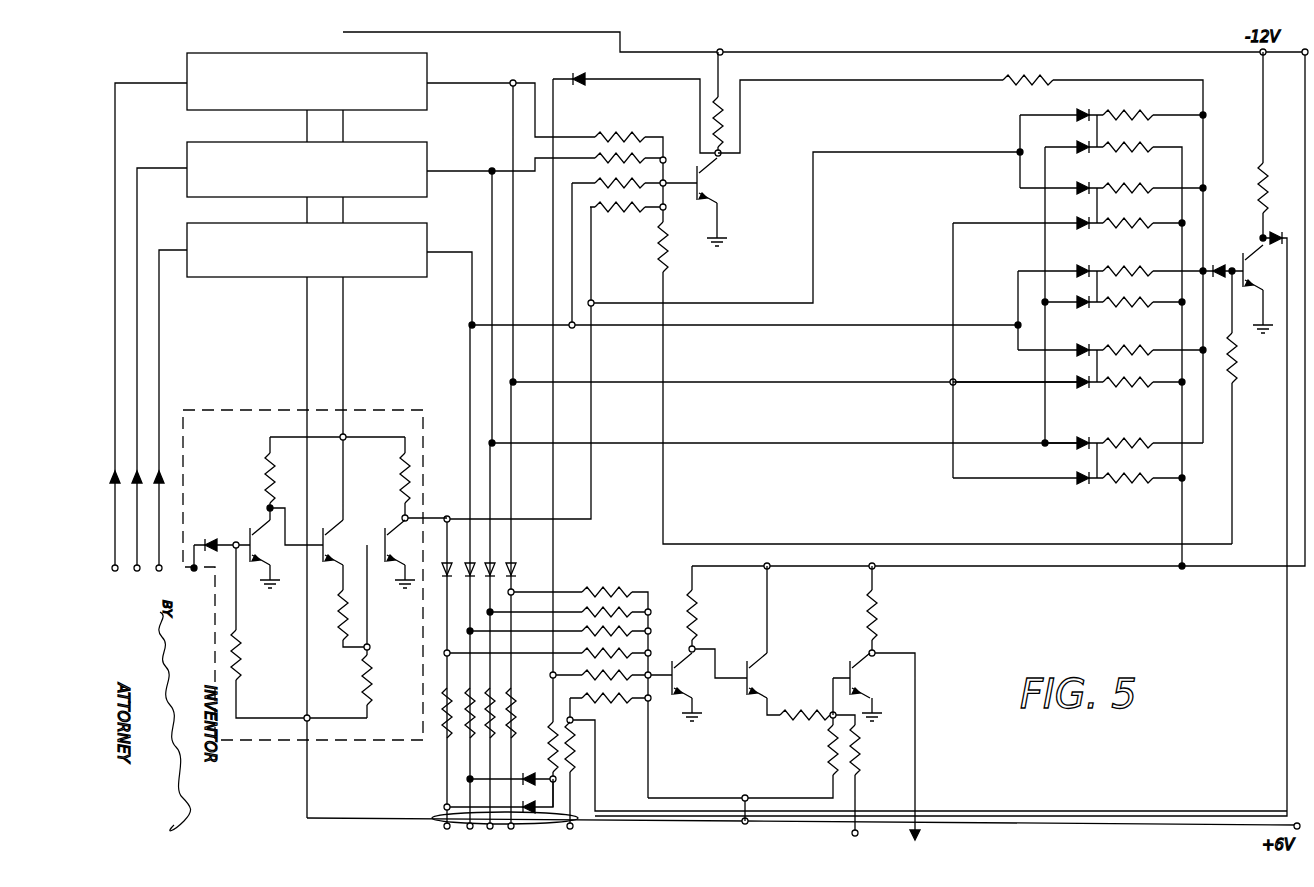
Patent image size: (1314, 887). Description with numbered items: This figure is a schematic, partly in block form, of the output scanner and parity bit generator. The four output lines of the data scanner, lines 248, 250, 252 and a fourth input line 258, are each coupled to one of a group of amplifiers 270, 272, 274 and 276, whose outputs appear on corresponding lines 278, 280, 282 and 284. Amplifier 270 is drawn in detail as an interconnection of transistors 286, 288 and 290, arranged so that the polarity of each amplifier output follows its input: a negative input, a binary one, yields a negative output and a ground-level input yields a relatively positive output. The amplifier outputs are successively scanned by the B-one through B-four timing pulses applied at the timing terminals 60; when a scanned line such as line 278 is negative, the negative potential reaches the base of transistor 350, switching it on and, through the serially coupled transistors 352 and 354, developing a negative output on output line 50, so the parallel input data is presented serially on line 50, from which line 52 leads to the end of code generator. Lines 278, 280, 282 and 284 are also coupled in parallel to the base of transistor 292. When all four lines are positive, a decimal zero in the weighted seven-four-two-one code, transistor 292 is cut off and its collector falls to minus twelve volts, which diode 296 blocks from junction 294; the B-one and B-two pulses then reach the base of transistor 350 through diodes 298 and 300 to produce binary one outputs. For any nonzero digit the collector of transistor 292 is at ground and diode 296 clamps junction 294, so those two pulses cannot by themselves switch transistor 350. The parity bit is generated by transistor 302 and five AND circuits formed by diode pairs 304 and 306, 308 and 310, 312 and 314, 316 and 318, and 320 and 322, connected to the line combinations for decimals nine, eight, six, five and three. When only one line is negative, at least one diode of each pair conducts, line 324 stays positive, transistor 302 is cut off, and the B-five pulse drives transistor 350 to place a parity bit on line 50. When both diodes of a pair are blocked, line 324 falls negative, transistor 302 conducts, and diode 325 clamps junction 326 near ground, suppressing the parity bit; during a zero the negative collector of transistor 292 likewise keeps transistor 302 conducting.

The amplifier 276 is at (288, 116).
The amplifier 274 is at (288, 201).
The amplifier 272 is at (288, 284).
The amplifier output line 284 is at (502, 82).
The amplifier output line 282 is at (477, 168).
The amplifier output line 280 is at (476, 242).
The amplifier output line 278 is at (919, 150).
The diode 296 is at (583, 86).
The transistor 292 is at (724, 149).
The diode 304 is at (1074, 114).
The diode 306 is at (1072, 146).
The diode 308 is at (1086, 184).
The diode 310 is at (1083, 220).
The diode 312 is at (1083, 268).
The diode 314 is at (1083, 299).
The diode 316 is at (1085, 346).
The diode 318 is at (1085, 379).
The diode 320 is at (1089, 440).
The diode 322 is at (1079, 473).
The line 324 is at (1205, 168).
The diode 325 is at (1276, 232).
The transistor 302 is at (1244, 276).
The amplifier 270 is at (315, 562).
The transistor 286 is at (240, 537).
The transistor 288 is at (312, 526).
The transistor 290 is at (382, 528).
The data scanner output line 248 is at (112, 575).
The data scanner output line 250 is at (134, 575).
The data scanner output line 252 is at (158, 575).
The input terminal 258 is at (192, 573).
The junction 294 is at (545, 676).
The junction 326 is at (570, 708).
The diode 300 is at (526, 774).
The diode 298 is at (520, 805).
The terminal connector 60 is at (577, 826).
The transistor 350 is at (709, 643).
The transistor 352 is at (754, 699).
The transistor 354 is at (874, 701).
The line 52 is at (850, 833).
The output line 50 is at (917, 834).